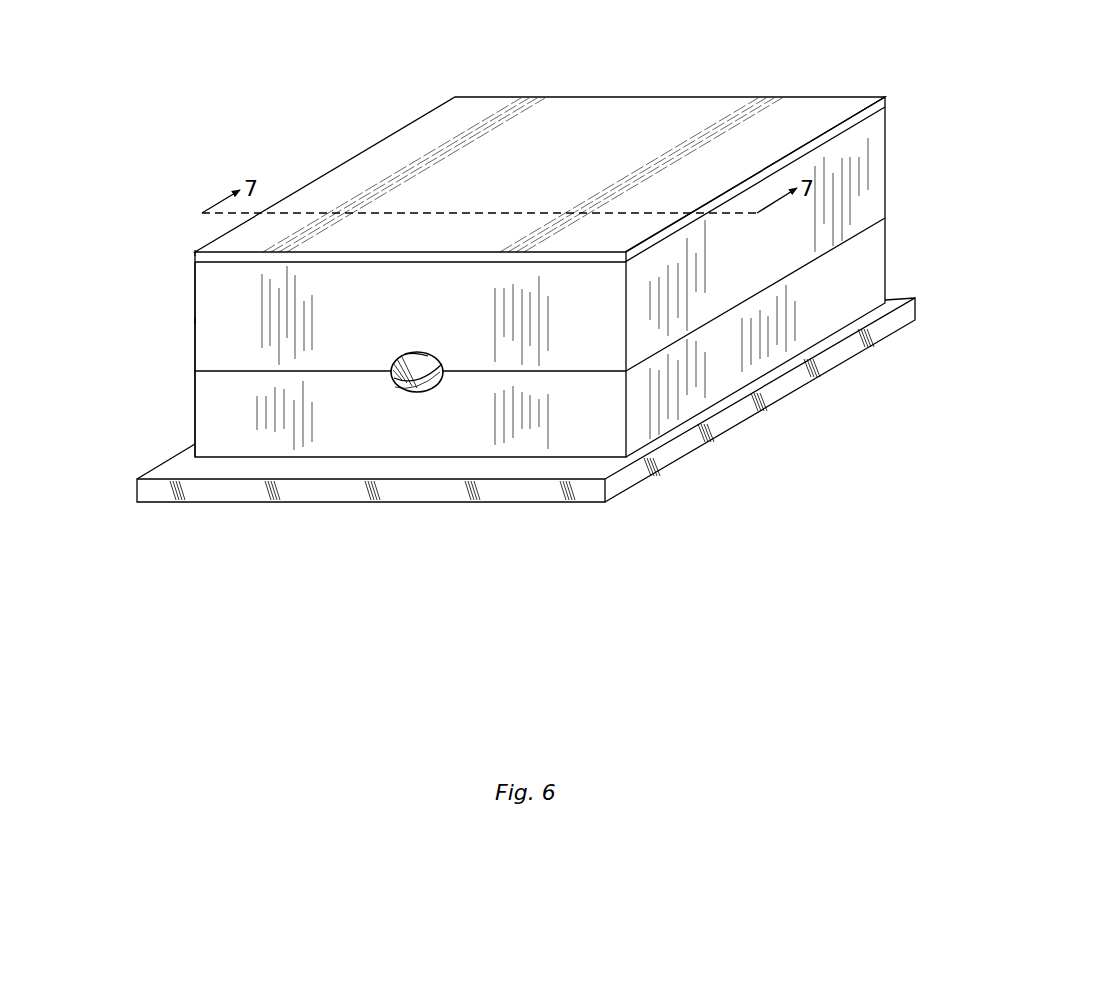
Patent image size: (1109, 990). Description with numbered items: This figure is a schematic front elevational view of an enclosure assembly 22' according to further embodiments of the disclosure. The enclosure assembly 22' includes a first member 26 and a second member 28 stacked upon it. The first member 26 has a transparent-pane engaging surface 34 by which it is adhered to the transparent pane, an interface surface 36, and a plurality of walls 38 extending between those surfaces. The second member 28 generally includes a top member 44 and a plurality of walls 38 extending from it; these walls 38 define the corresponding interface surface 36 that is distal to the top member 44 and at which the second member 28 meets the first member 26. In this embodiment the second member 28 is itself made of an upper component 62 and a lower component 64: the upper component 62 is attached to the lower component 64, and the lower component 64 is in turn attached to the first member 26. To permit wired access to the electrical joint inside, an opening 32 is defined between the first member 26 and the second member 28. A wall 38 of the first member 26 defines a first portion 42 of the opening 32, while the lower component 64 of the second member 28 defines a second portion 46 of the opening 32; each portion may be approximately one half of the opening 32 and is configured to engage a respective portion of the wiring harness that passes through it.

The enclosure assembly 22' is at (540, 61).
The top member 44 is at (797, 108).
The walls 38 is at (887, 103).
The upper component 62 is at (192, 252).
The interface surface 36 is at (206, 270).
The second member 28 is at (116, 317).
The lower component 64 is at (190, 320).
The first member 26 is at (190, 441).
The second portion 46 is at (412, 350).
The first portion 42 is at (448, 358).
The opening 32 is at (418, 397).
The transparent-pane engaging surface 34 is at (835, 357).